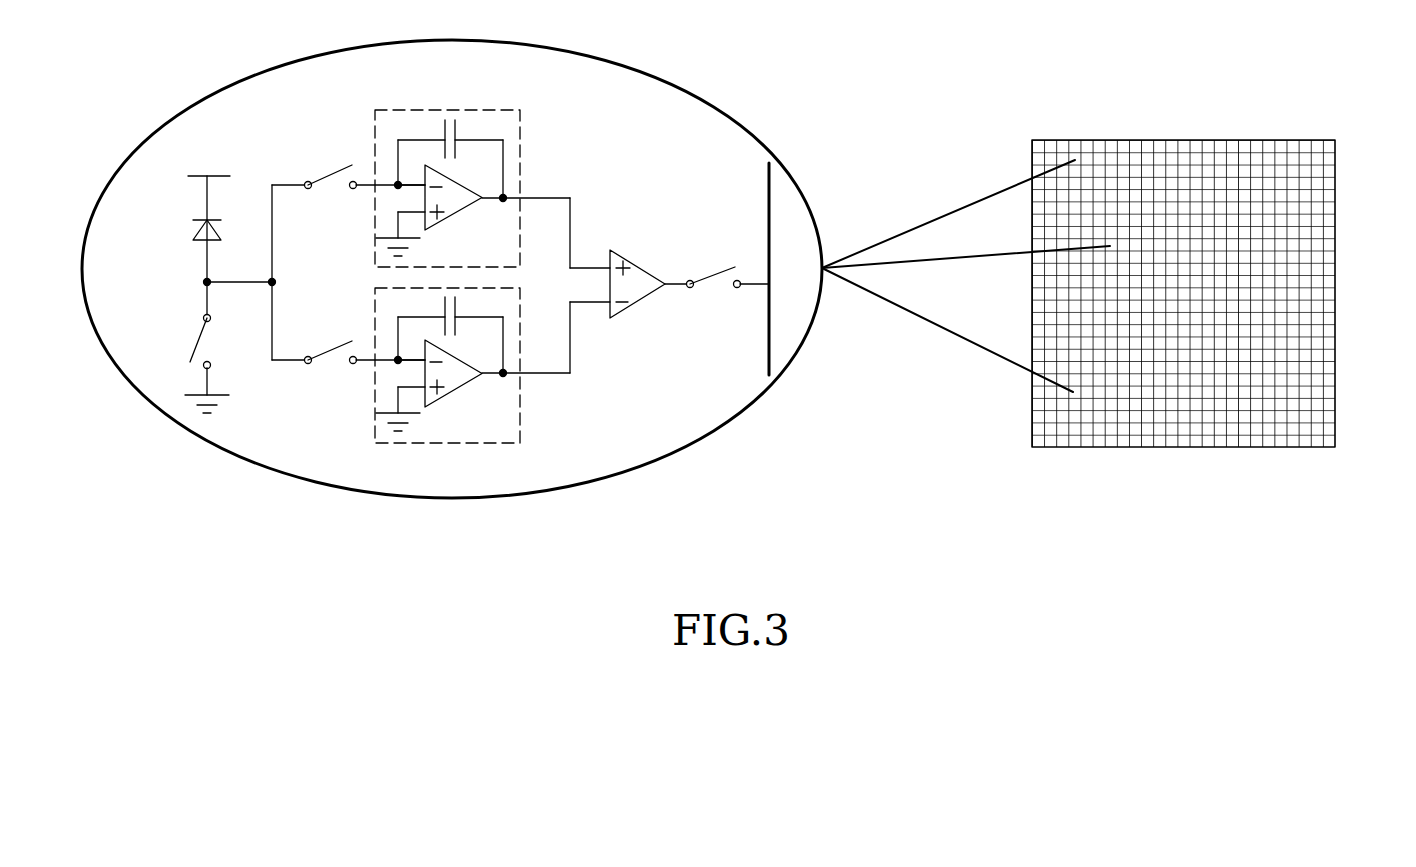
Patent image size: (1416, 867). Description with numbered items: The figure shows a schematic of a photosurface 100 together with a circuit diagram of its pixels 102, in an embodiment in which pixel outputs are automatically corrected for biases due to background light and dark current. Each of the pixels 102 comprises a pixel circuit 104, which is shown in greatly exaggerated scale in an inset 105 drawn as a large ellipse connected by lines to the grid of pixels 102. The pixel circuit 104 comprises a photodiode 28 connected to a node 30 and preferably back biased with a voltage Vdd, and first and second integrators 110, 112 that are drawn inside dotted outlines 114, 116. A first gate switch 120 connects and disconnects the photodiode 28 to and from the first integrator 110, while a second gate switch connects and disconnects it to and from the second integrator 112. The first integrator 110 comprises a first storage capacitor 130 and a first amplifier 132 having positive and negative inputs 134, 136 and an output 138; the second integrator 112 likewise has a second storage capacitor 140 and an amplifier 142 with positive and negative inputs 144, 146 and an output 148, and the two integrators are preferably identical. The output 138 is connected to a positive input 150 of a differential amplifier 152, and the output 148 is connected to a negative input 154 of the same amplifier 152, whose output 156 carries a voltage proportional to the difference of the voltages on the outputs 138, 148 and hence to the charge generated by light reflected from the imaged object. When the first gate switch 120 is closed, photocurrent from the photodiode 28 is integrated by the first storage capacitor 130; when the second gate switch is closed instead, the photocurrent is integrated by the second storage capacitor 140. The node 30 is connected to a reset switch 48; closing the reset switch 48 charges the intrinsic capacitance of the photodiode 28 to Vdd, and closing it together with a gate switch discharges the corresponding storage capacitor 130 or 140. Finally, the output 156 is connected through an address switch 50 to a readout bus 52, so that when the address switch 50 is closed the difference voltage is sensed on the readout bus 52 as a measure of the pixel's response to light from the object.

The photodiode 28 is at (198, 222).
The node 30 is at (210, 285).
The reset switch 48 is at (197, 340).
The address switch 50 is at (717, 282).
The readout bus 52 is at (766, 223).
The pixel array 100 is at (1275, 95).
The pixels 102 is at (1268, 197).
The pixel circuit 104 is at (627, 91).
The inset 105 is at (714, 101).
The first integrator 110 is at (501, 114).
The second integrator 112 is at (509, 418).
The dotted circle 114 is at (475, 109).
The dotted circle 116 is at (483, 445).
The first gate switch 120 is at (343, 170).
The first storage capacitor 130 is at (446, 122).
The first amplifier 132 is at (458, 193).
The positive input 134 is at (426, 197).
The negative input 136 is at (420, 178).
The output 138 is at (504, 196).
The second storage capacitor 140 is at (442, 302).
The amplifier 142 is at (460, 362).
The positive input 144 is at (425, 383).
The negative input 146 is at (425, 365).
The output 148 is at (483, 376).
The positive input 150 is at (604, 267).
The differential amplifier 152 is at (638, 276).
The negative input 154 is at (600, 318).
The output 156 is at (667, 292).